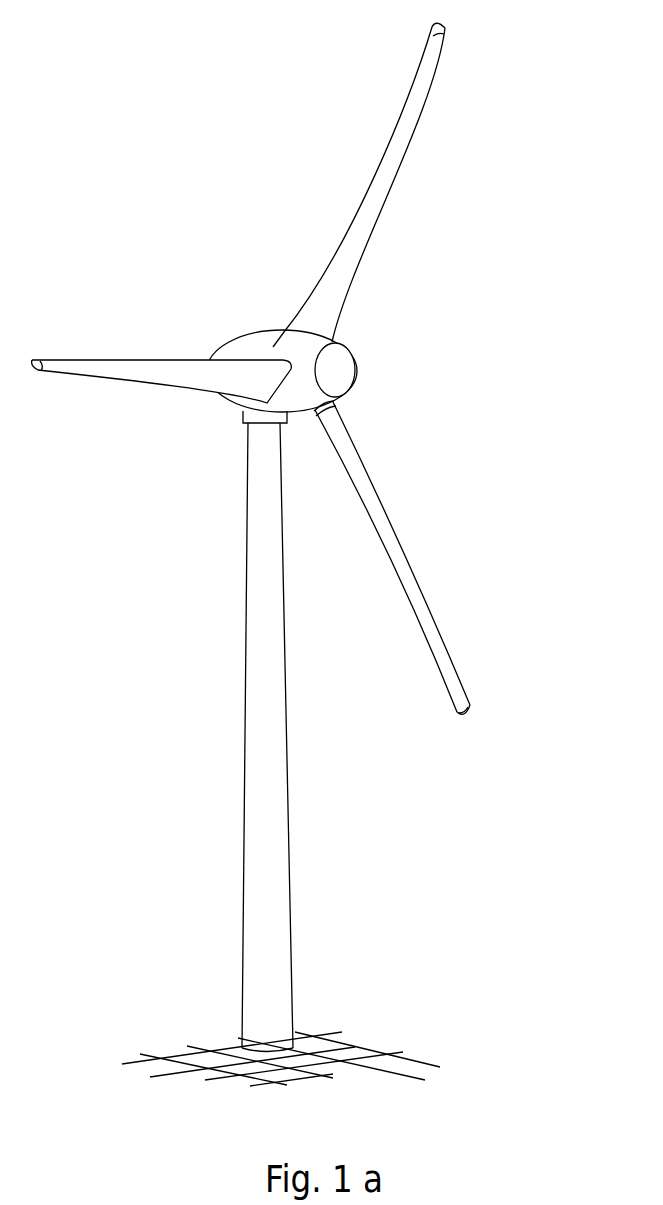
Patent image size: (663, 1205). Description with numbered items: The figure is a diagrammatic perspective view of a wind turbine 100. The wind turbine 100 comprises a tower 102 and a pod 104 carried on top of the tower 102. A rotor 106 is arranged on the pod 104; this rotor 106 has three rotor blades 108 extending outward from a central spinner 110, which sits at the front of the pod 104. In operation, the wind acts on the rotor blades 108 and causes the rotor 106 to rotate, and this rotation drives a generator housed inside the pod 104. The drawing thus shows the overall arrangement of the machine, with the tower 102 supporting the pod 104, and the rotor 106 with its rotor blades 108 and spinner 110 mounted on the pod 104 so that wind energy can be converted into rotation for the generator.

The wind turbine 100 is at (206, 487).
The tower 102 is at (270, 833).
The pod 104 is at (257, 346).
The rotor 106 is at (418, 297).
The rotor blades 108 is at (394, 140).
The spinner 110 is at (340, 368).